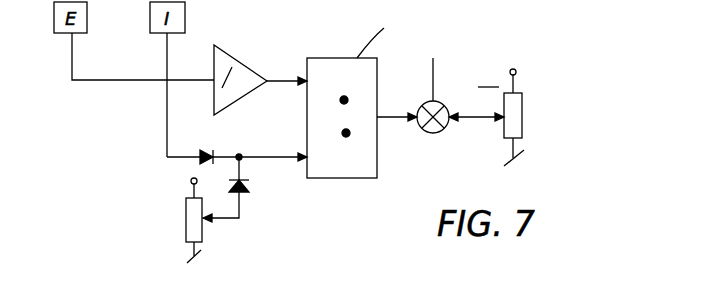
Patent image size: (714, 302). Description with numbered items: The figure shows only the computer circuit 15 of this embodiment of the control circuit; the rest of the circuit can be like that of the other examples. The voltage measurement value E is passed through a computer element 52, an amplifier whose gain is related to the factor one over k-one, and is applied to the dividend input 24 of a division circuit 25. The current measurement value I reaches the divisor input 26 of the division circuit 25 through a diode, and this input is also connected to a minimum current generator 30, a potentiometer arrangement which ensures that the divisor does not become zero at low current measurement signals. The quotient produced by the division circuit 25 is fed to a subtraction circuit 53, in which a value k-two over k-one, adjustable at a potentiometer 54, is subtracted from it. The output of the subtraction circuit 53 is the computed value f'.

The computer circuit 15 is at (290, 55).
The dividend input 24 is at (277, 79).
The division circuit 25 is at (345, 173).
The divisor input 26 is at (287, 160).
The minimum current generator 30 is at (221, 235).
The computer element 52 is at (230, 50).
The subtraction circuit 53 is at (433, 133).
The potentiometer 54 is at (522, 112).